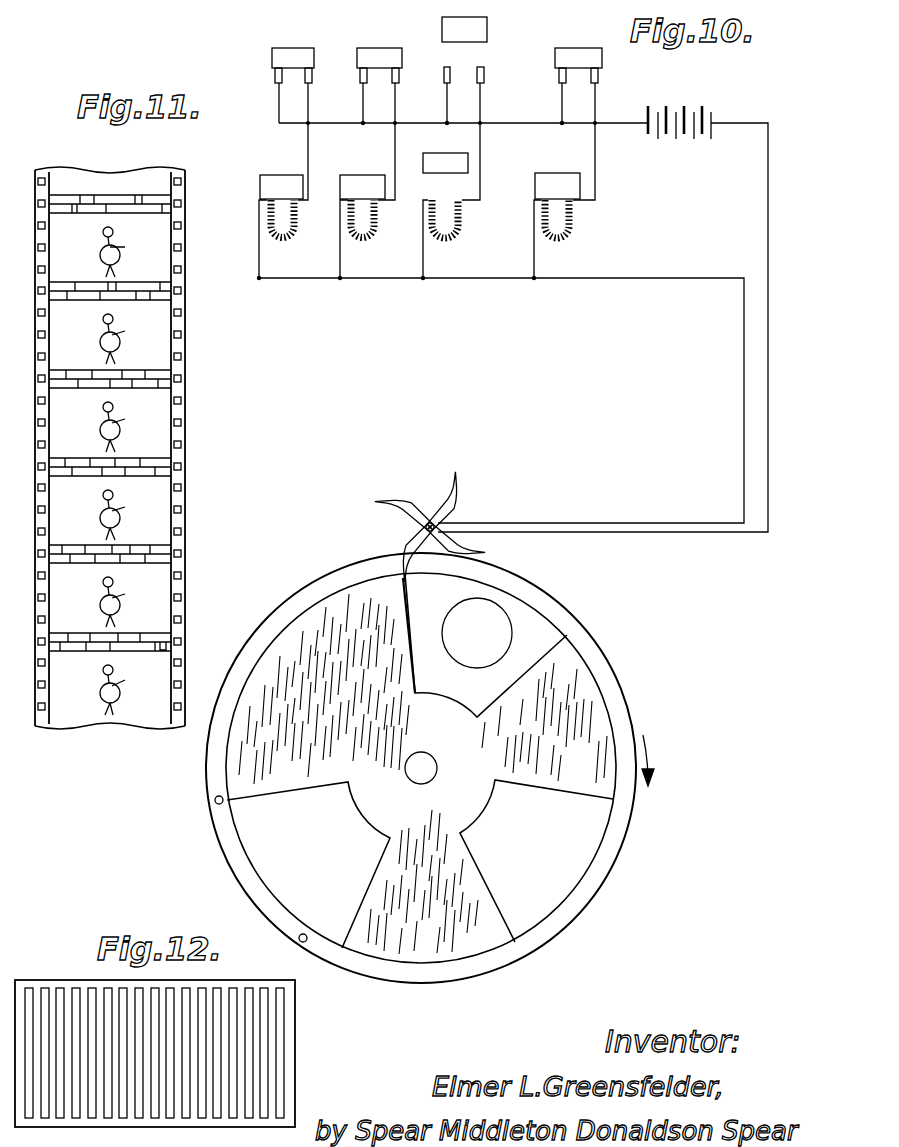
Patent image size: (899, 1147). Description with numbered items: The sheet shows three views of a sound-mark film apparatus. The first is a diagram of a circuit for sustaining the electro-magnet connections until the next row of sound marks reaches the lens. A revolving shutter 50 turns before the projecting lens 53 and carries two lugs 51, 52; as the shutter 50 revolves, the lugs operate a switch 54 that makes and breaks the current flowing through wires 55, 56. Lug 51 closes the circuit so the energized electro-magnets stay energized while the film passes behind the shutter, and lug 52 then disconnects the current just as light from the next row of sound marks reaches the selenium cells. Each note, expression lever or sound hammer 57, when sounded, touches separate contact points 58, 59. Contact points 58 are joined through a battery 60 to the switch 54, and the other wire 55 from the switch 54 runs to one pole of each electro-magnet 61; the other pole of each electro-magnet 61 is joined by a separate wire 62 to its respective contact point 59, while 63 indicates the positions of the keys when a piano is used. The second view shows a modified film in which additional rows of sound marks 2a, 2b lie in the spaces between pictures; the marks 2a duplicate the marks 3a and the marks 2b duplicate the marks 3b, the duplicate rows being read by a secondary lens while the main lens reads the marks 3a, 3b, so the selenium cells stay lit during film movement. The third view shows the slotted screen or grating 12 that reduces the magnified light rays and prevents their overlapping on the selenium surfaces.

In FIG. 10, the sound hammer 57 is at (483, 12).
In FIG. 10, the contact point 58 is at (560, 81).
In FIG. 10, the contact point 59 is at (608, 77).
In FIG. 10, the battery 60 is at (673, 143).
In FIG. 10, the electro-magnet 61 is at (588, 237).
In FIG. 10, the wire 62 is at (603, 148).
In FIG. 10, the key position 63 is at (607, 185).
In FIG. 10, the wire 56 is at (663, 547).
In FIG. 10, the wire 55 is at (635, 522).
In FIG. 10, the switch 54 is at (408, 502).
In FIG. 10, the projecting lens 53 is at (477, 633).
In FIG. 10, the shutter 50 is at (610, 683).
In FIG. 10, the lug 51 is at (214, 801).
In FIG. 10, the lug 52 is at (299, 941).
In FIG. 11, the sound marks 2a is at (162, 198).
In FIG. 11, the sound marks 2b is at (170, 280).
In FIG. 11, the sound marks 3a is at (163, 559).
In FIG. 11, the sound marks 3b is at (163, 647).
In FIG. 12, the screen 12 is at (290, 1047).